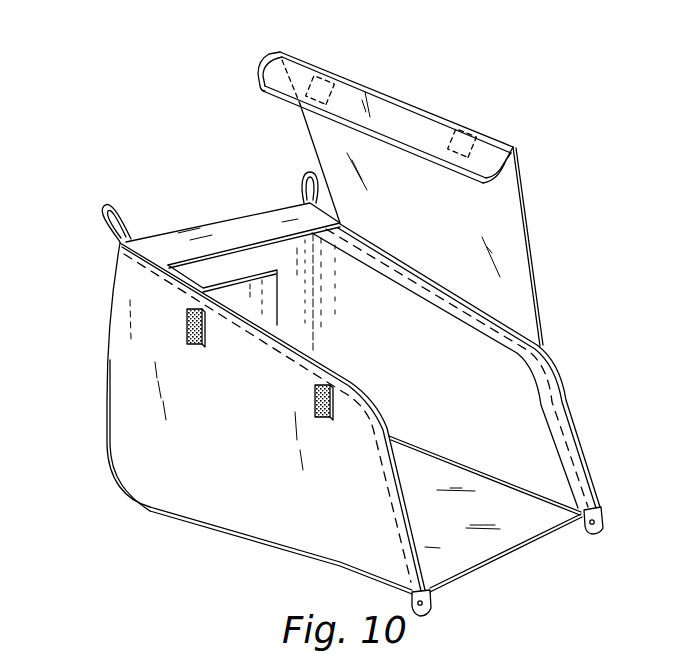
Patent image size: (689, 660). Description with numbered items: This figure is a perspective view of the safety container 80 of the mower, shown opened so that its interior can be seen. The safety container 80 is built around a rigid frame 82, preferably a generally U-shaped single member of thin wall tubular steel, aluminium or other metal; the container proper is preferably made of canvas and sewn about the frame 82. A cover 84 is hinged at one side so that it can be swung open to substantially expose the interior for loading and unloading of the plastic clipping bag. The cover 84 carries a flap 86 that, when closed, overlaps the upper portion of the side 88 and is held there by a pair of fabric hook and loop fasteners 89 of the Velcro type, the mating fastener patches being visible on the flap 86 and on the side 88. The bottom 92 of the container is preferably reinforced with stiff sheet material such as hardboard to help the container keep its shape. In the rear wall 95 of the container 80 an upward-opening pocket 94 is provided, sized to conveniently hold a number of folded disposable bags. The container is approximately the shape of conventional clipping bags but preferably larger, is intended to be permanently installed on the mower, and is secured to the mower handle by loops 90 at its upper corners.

The safety container 80 is at (287, 533).
The rigid frame 82 is at (384, 428).
The cover 84 is at (528, 225).
The flap 86 is at (423, 102).
The side 88 is at (173, 485).
The fabric hook and loop fasteners 89 is at (317, 68).
The hanging loops 90 is at (124, 218).
The bottom 92 is at (518, 530).
The pocket 94 is at (233, 293).
The rear wall 95 is at (280, 252).